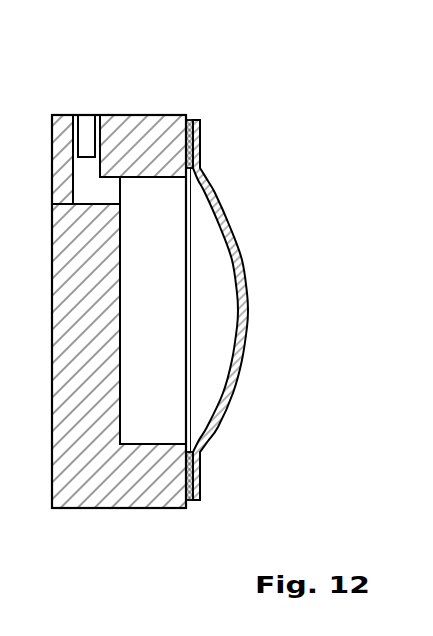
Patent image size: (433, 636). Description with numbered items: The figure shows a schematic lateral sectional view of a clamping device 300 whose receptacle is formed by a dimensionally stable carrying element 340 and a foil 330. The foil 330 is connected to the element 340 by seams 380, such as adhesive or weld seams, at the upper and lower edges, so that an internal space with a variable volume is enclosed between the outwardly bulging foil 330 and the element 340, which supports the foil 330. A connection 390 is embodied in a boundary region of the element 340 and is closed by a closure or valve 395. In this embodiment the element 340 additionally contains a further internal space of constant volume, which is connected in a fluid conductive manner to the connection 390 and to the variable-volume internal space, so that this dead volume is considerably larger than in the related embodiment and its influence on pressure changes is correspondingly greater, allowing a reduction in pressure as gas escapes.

The clamping device 300 is at (108, 36).
The foil 330 is at (216, 196).
The element 340 is at (112, 508).
The seams 380 is at (189, 120).
The connection 390 is at (63, 123).
The valve 395 is at (87, 113).